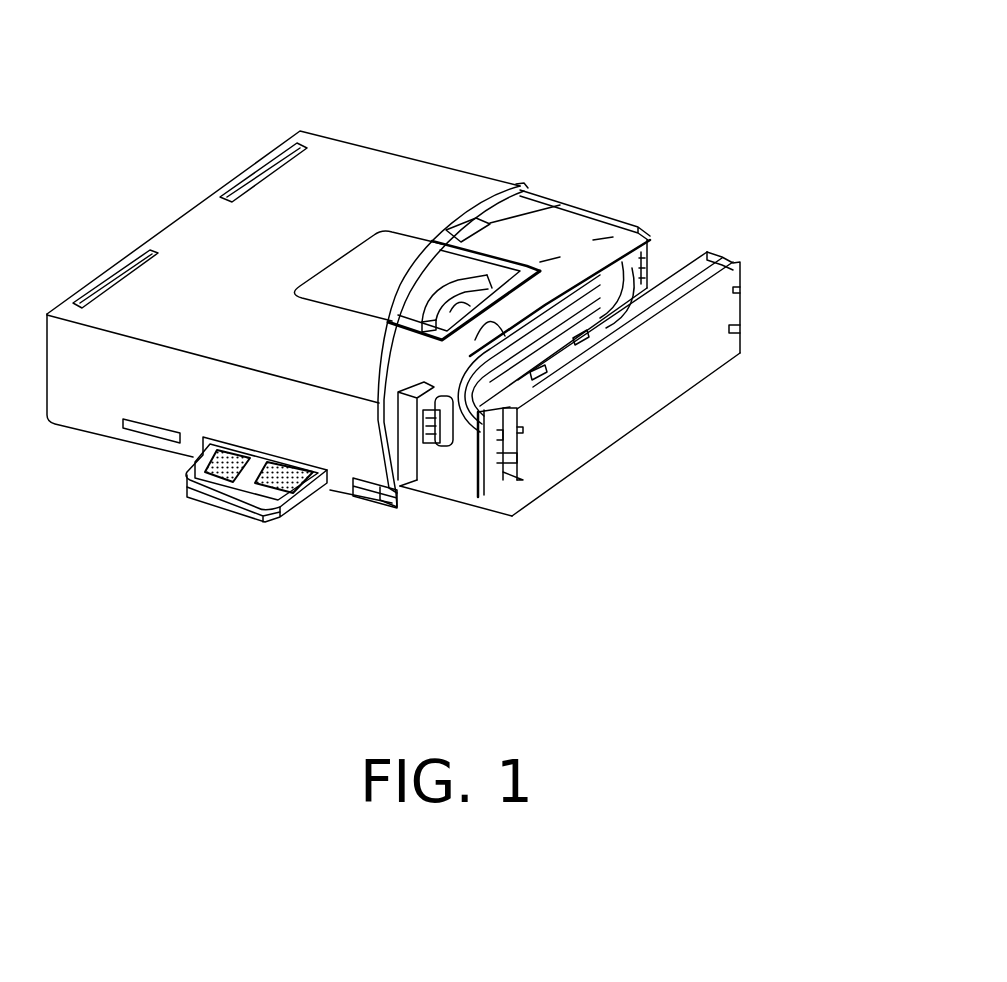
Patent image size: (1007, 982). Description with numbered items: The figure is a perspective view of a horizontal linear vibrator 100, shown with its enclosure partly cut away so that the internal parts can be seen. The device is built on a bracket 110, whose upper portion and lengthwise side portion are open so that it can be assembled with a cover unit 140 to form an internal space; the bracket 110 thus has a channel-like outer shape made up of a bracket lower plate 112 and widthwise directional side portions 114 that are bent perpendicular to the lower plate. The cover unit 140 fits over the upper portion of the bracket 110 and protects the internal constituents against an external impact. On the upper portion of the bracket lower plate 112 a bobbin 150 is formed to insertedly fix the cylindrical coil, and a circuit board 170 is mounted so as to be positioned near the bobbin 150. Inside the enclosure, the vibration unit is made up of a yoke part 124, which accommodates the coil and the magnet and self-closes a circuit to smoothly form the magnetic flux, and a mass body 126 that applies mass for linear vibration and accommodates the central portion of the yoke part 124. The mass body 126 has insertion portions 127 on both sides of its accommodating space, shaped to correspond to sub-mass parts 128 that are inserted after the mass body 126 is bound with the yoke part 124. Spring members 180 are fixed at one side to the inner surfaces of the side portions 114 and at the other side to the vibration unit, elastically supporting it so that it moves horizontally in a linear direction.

The horizontal linear vibrator 100 is at (166, 46).
The bracket 110 is at (569, 489).
The bracket lower plate 112 is at (454, 488).
The widthwise directional side portions 114 is at (627, 407).
The yoke part 124 is at (560, 205).
The mass body 126 is at (621, 225).
The insertion portions 127 is at (480, 205).
The sub-mass parts 128 is at (462, 219).
The cover unit 140 is at (366, 157).
The bobbin 150 is at (580, 220).
The circuit board 170 is at (240, 483).
The spring members 180 is at (607, 290).